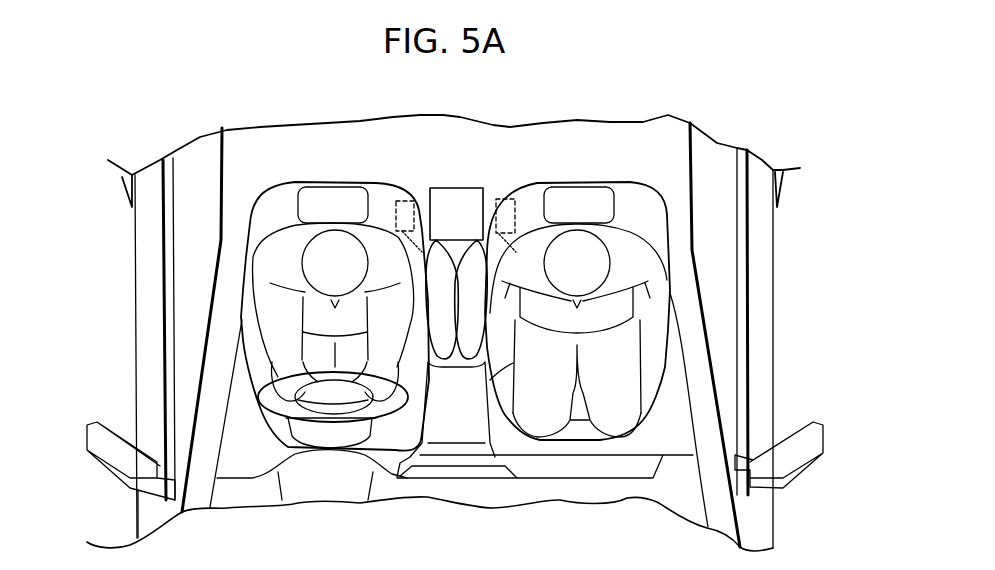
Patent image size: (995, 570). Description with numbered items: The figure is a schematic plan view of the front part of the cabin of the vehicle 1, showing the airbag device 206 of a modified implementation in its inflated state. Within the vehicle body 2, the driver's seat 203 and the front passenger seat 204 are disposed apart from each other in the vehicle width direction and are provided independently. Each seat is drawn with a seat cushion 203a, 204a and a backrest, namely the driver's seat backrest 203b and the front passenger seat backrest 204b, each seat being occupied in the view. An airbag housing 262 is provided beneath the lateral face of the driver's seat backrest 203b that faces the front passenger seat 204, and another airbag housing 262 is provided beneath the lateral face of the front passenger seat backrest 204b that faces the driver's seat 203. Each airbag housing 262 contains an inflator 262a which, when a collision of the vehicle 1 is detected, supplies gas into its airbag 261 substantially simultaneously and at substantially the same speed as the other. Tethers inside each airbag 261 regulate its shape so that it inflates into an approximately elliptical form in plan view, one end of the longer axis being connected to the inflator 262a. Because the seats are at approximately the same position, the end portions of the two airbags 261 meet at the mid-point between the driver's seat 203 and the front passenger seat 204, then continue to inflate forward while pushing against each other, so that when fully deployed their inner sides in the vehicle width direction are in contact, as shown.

The vehicle 1 is at (121, 285).
The vehicle body 2 is at (140, 320).
The driver's seat 203 is at (270, 220).
The seat cushion 203a is at (258, 355).
The driver's seat backrest 203b is at (277, 203).
The front passenger seat 204 is at (640, 222).
The seat cushion 204a is at (645, 360).
The front passenger seat backrest 204b is at (623, 203).
The airbag device 206 is at (413, 188).
The airbag 261 is at (437, 238).
The airbag housing 262 is at (395, 205).
The inflator 262a is at (403, 203).